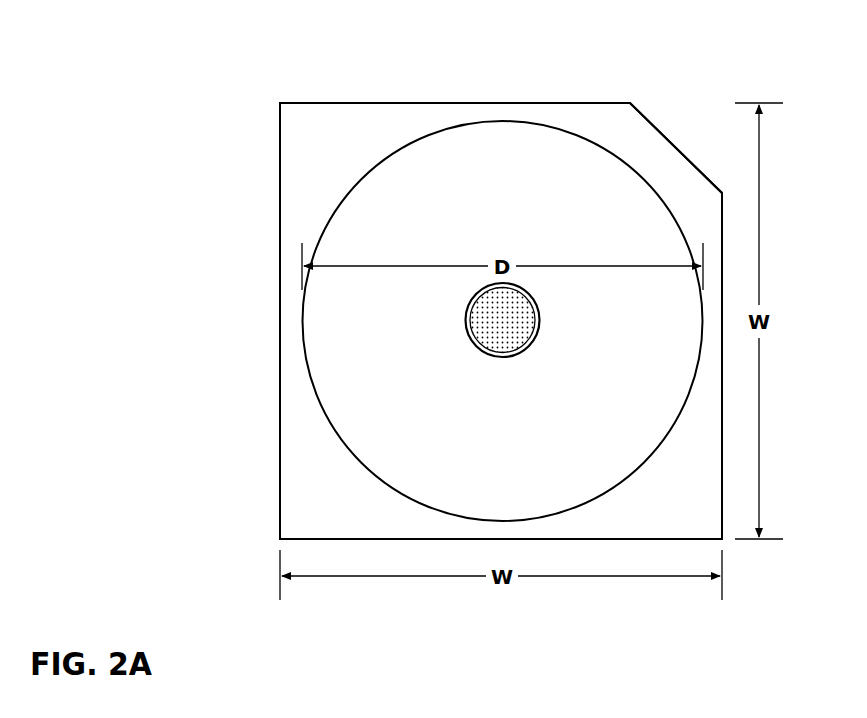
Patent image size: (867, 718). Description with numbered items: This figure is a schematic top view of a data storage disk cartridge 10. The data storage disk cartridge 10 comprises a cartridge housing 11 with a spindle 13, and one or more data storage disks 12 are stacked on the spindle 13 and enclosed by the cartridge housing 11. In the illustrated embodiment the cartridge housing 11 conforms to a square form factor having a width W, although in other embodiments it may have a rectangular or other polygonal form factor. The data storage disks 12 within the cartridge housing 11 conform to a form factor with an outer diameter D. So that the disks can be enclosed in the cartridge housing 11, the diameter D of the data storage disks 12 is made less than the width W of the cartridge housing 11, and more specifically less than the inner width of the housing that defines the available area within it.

The data storage disk cartridge 10 is at (316, 44).
The cartridge housing 11 is at (317, 502).
The data storage disk 12 is at (520, 157).
The spindle 13 is at (503, 335).